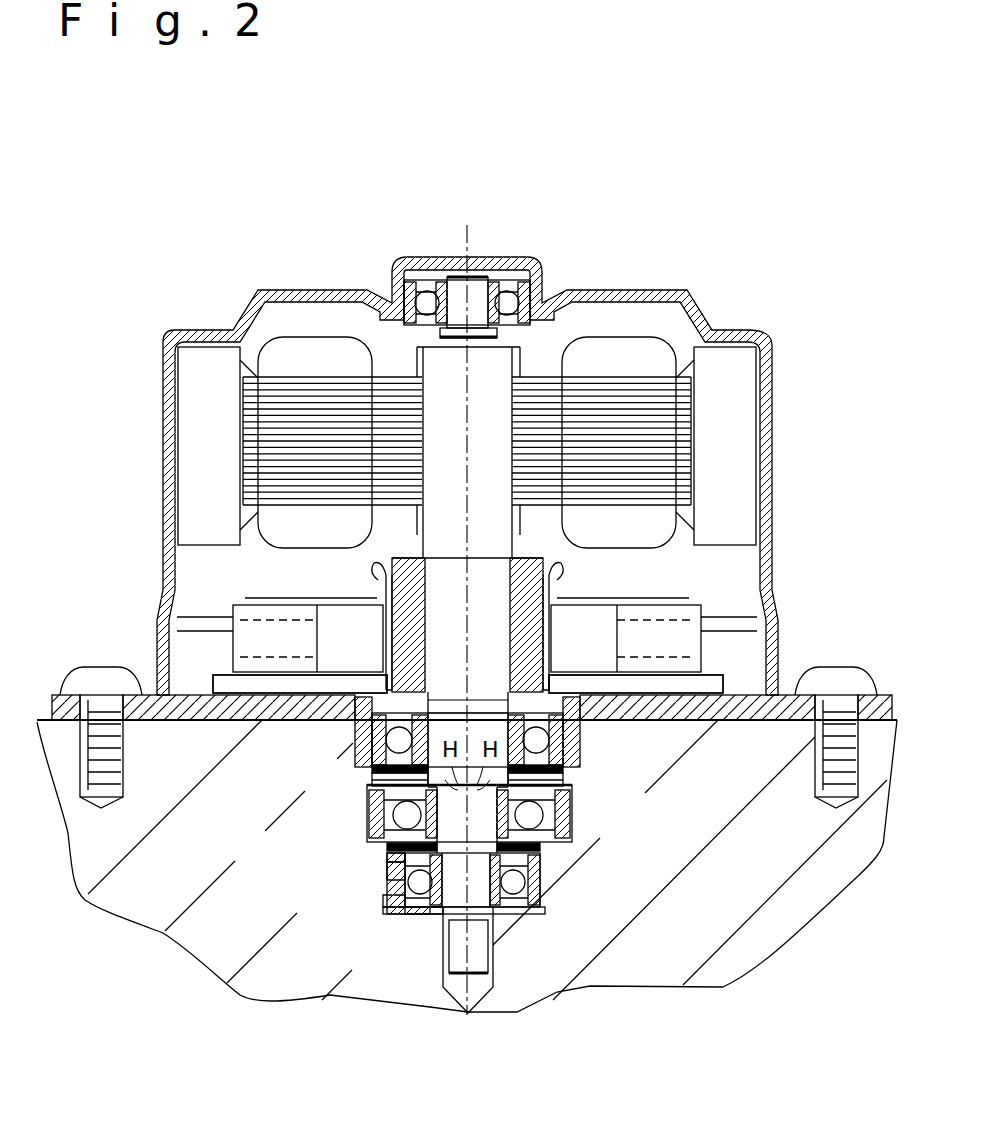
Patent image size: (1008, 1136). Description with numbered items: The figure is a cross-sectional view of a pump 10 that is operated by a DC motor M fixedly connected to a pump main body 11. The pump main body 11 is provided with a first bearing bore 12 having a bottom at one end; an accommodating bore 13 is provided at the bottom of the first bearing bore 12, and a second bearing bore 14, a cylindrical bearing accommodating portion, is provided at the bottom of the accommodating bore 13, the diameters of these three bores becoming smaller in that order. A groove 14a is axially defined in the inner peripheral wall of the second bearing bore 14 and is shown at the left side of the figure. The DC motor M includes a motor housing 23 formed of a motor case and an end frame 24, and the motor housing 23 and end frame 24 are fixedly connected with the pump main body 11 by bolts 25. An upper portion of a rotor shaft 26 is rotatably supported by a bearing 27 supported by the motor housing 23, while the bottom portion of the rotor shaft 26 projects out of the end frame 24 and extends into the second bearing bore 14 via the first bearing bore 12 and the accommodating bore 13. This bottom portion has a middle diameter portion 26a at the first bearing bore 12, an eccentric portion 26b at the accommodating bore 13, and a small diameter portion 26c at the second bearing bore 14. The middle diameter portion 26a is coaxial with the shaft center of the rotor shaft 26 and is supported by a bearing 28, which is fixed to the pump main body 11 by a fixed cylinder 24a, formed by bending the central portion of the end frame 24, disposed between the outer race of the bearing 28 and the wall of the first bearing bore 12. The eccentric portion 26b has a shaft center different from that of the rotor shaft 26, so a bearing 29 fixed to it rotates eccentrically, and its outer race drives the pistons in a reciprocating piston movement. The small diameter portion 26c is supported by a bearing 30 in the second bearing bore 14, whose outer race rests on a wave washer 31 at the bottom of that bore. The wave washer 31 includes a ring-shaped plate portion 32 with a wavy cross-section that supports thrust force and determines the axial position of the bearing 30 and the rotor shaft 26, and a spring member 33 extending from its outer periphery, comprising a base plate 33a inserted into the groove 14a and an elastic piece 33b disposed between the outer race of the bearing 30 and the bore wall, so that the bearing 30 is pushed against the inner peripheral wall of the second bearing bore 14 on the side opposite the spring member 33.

The pump 10 is at (797, 568).
The pump main body 11 is at (787, 928).
The first bearing bore 12 is at (583, 745).
The accommodating bore 13 is at (572, 812).
The second bearing bore 14 is at (548, 880).
The groove 14a is at (387, 893).
The motor housing 23 is at (775, 404).
The end frame 24 is at (752, 721).
The fixed cylinder 24a is at (355, 743).
The bolts 25 is at (88, 668).
The rotor shaft 26 is at (520, 541).
The middle diameter portion 26a is at (440, 777).
The eccentric portion 26b is at (550, 866).
The small diameter portion 26c is at (484, 889).
The bearing 27 is at (540, 318).
The bearing 28 is at (568, 773).
The bearing 29 is at (368, 803).
The bearing 30 is at (388, 905).
The wave washer 31 is at (389, 924).
The plate portion 32 is at (420, 917).
The spring member 33 is at (288, 832).
The base plate 33a is at (388, 868).
The elastic piece 33b is at (390, 855).
The DC motor M is at (684, 290).